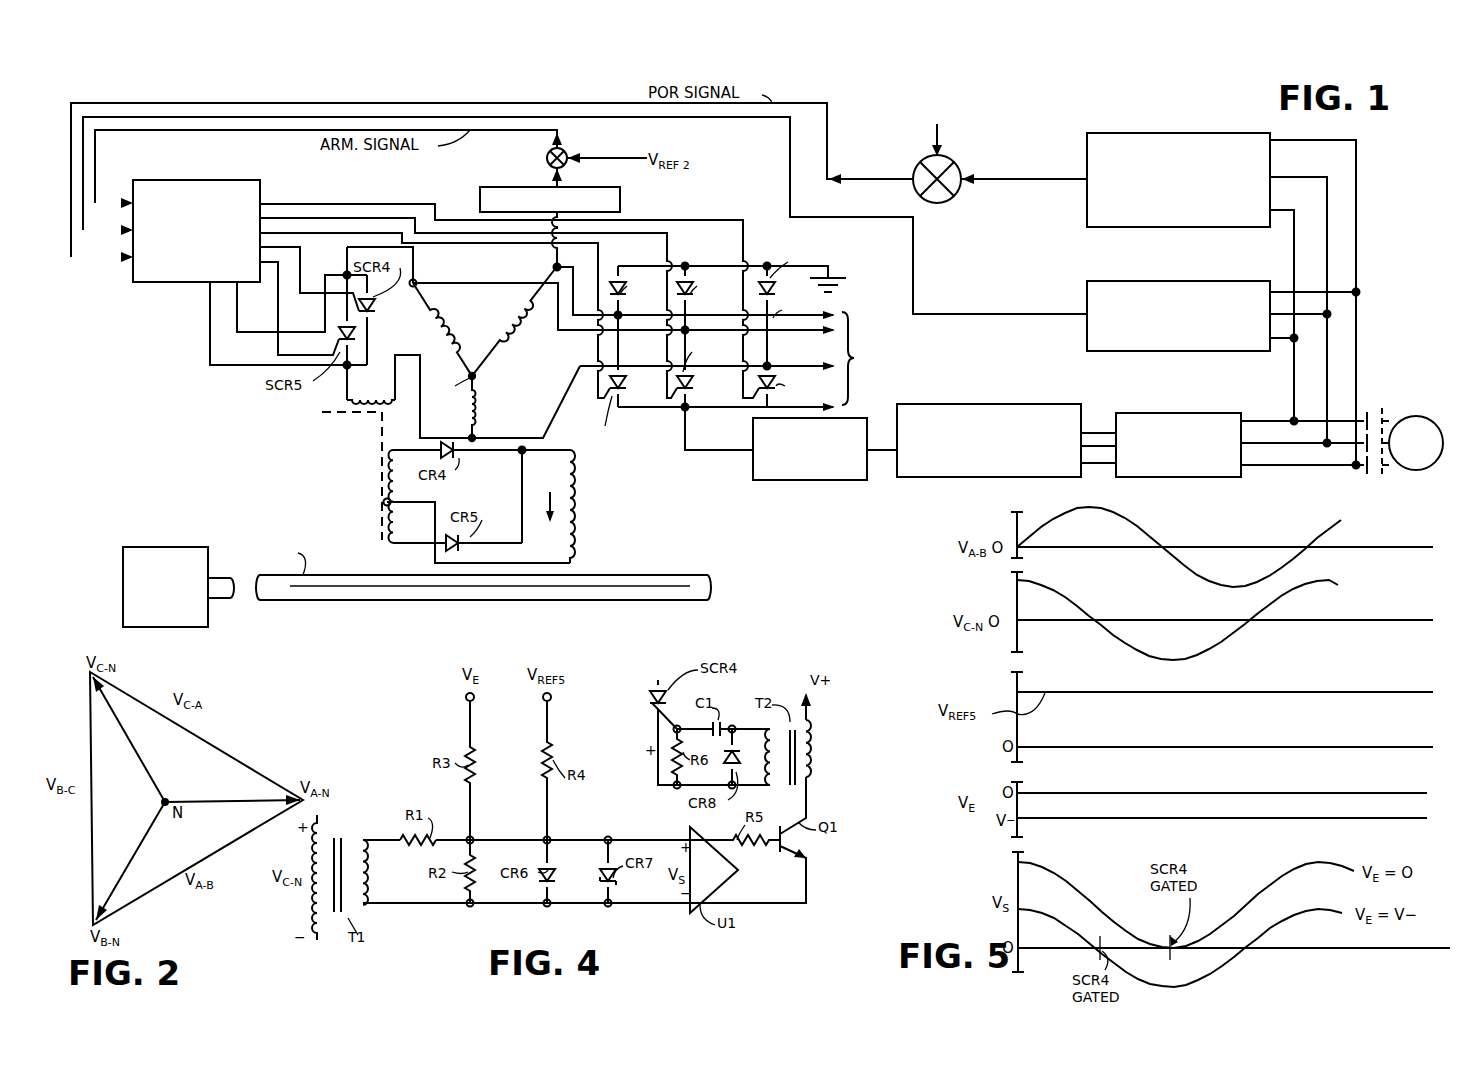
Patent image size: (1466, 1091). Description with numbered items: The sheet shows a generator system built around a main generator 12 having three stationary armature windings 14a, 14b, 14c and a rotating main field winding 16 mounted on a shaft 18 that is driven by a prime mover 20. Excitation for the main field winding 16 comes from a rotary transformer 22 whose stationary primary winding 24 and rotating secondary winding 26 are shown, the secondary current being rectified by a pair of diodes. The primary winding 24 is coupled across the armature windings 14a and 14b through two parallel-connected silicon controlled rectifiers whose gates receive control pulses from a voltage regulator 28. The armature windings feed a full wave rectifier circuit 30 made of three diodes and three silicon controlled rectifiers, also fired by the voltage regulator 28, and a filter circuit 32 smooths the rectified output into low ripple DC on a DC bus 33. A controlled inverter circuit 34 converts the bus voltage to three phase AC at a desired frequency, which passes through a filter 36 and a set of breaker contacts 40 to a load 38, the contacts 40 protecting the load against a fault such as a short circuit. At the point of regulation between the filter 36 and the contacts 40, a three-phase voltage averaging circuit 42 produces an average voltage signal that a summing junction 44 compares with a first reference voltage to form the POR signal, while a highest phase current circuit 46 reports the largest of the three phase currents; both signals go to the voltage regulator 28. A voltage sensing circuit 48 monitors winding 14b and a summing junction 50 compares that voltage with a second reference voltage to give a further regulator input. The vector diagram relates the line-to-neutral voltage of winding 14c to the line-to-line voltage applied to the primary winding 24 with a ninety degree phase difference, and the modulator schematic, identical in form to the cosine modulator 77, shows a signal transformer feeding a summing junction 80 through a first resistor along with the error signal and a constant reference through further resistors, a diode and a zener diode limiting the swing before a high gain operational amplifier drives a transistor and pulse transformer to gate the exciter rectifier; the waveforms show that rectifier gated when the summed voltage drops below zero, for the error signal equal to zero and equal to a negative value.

In FIG. 1, the main generator 12 is at (487, 396).
In FIG. 1, the stationary armature winding 14a is at (478, 410).
In FIG. 1, the stationary armature winding 14b is at (445, 331).
In FIG. 1, the stationary armature winding 14c is at (505, 336).
In FIG. 1, the main field winding 16 is at (578, 476).
In FIG. 1, the shaft 18 is at (556, 594).
In FIG. 1, the prime mover 20 is at (198, 618).
In FIG. 1, the rotary transformer 22 is at (352, 476).
In FIG. 1, the stationary primary winding 24 is at (350, 401).
In FIG. 1, the rotating secondary winding 26 is at (392, 546).
In FIG. 1, the voltage regulator 28 is at (166, 272).
In FIG. 1, the full wave rectifier circuit 30 is at (784, 344).
In FIG. 1, the filter circuit 32 is at (808, 480).
In FIG. 1, the DC bus 33 is at (893, 455).
In FIG. 1, the controlled inverter circuit 34 is at (1050, 404).
In FIG. 1, the filter 36 is at (1178, 413).
In FIG. 1, the load 38 is at (1412, 418).
In FIG. 1, the breaker contacts 40 is at (1392, 480).
In FIG. 1, the three-phase voltage averaging circuit 42 is at (1238, 120).
In FIG. 1, the summing junction 44 is at (948, 160).
In FIG. 1, the highest phase current circuit 46 is at (1147, 283).
In FIG. 1, the voltage sensing circuit 48 is at (622, 200).
In FIG. 1, the summing junction 50 is at (546, 158).
In FIG. 4, the cosine modulator 77 is at (416, 916).
In FIG. 4, the summing junction 80 is at (524, 840).